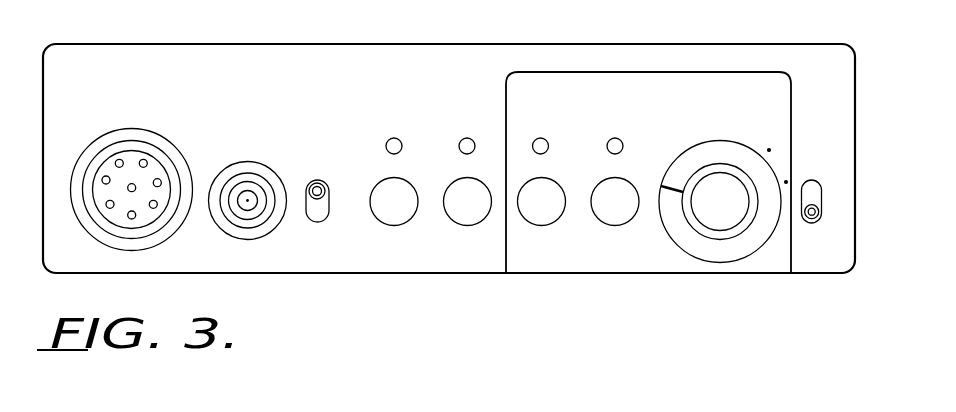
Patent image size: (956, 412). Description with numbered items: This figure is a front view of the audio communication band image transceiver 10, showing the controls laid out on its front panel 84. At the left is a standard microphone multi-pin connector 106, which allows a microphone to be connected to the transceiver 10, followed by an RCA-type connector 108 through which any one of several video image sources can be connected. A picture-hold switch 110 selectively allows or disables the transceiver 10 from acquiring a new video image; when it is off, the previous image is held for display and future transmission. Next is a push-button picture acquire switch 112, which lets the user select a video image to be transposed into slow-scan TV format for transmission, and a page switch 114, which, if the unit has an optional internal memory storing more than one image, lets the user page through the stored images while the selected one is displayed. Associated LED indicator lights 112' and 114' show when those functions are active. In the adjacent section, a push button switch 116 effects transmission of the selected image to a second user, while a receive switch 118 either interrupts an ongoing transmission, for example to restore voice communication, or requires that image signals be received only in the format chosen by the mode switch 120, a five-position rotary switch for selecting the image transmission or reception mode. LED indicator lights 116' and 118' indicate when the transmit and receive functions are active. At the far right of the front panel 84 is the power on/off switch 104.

The transceiver 10 is at (462, 288).
The front panel 84 is at (357, 55).
The power on/off switch 104 is at (813, 185).
The microphone multi-pin connector 106 is at (159, 165).
The RCA-type connector 108 is at (257, 176).
The picture-hold switch 110 is at (328, 197).
The picture acquire switch 112 is at (405, 208).
The LED indicator light 112' is at (415, 124).
The page switch 114 is at (452, 222).
The LED indicator light 114' is at (477, 124).
The push button switch 116 is at (551, 211).
The LED indicator light 116' is at (559, 127).
The receive switch 118 is at (610, 222).
The LED indicator light 118' is at (604, 130).
The mode switch 120 is at (722, 230).